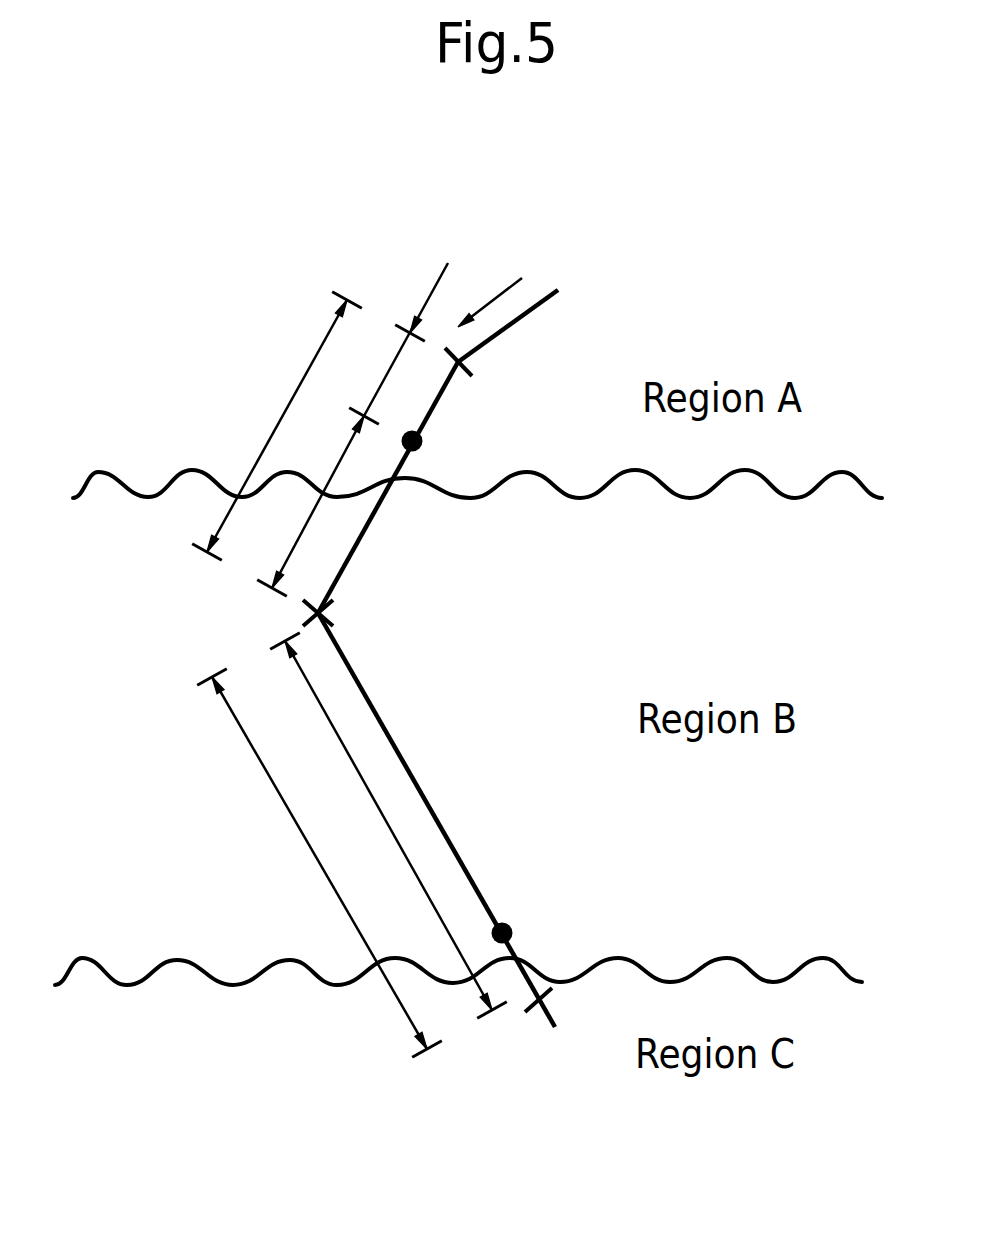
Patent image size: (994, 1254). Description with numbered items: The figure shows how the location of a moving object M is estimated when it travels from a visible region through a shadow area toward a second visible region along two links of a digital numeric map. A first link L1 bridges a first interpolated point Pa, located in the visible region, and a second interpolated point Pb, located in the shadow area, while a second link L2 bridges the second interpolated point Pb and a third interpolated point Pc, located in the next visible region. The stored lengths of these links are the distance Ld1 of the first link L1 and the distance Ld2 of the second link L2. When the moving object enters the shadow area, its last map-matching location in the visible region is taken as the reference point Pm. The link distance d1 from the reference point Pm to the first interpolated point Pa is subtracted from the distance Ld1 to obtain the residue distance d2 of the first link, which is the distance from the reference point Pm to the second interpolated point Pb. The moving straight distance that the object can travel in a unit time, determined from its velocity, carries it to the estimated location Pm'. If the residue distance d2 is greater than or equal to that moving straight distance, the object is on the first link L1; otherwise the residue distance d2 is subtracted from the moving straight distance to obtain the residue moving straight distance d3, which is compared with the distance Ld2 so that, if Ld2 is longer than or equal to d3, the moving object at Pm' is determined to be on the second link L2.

The moving object M is at (508, 307).
The first link L1 is at (383, 503).
The second link L2 is at (422, 794).
The first interpolated point Pa is at (478, 372).
The reference point Pm is at (435, 459).
The second interpolated point Pb is at (345, 614).
The estimated location of the moving object Pm' is at (533, 934).
The third interpolated point Pc is at (561, 1002).
The link distance from the reference point to the first interpolated point d1 is at (390, 348).
The residue distance of the first link d2 is at (310, 506).
The residue moving straight distance d3 is at (388, 826).
The distance of the first link Ld1 is at (277, 426).
The distance of the second link Ld2 is at (319, 863).